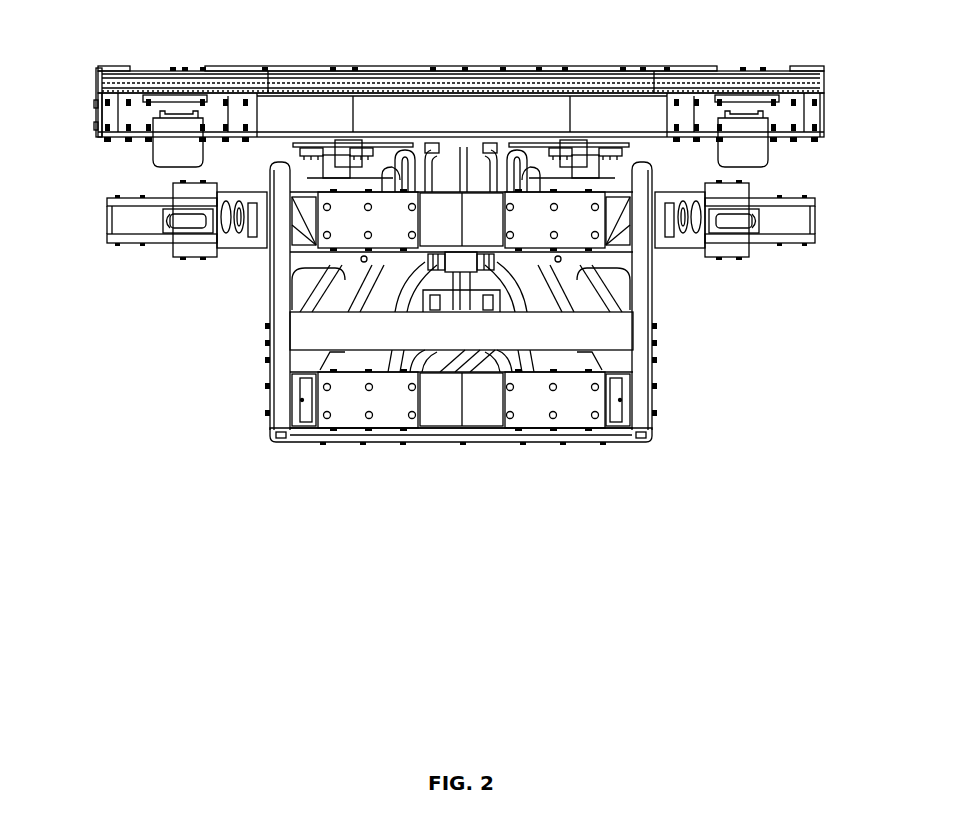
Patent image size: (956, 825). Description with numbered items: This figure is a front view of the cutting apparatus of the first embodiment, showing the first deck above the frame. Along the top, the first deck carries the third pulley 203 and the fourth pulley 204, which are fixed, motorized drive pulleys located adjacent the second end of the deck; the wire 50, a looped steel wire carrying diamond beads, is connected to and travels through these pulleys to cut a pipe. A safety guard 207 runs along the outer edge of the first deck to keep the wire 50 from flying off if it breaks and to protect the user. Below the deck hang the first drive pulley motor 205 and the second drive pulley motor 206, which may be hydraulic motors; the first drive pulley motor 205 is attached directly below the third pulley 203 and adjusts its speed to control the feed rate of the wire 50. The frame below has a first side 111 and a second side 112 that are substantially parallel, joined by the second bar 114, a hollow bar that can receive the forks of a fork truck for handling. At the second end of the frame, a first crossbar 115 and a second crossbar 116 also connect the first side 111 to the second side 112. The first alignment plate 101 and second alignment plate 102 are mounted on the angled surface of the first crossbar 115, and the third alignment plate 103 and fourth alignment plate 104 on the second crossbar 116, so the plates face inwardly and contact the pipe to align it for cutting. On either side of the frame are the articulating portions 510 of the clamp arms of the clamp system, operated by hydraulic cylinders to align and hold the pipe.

The wire 50 is at (373, 80).
The third pulley 203 is at (822, 70).
The fourth pulley 204 is at (96, 73).
The first drive pulley motor 205 is at (773, 157).
The second drive pulley motor 206 is at (153, 163).
The safety guard 207 is at (108, 66).
The articulating portion 510 is at (130, 243).
The first alignment plate 101 is at (348, 218).
The second alignment plate 102 is at (560, 219).
The third alignment plate 103 is at (350, 400).
The fourth alignment plate 104 is at (575, 412).
The first crossbar 115 is at (443, 222).
The second crossbar 116 is at (442, 407).
The second bar 114 is at (603, 333).
The second side 112 is at (268, 368).
The first side 111 is at (655, 372).